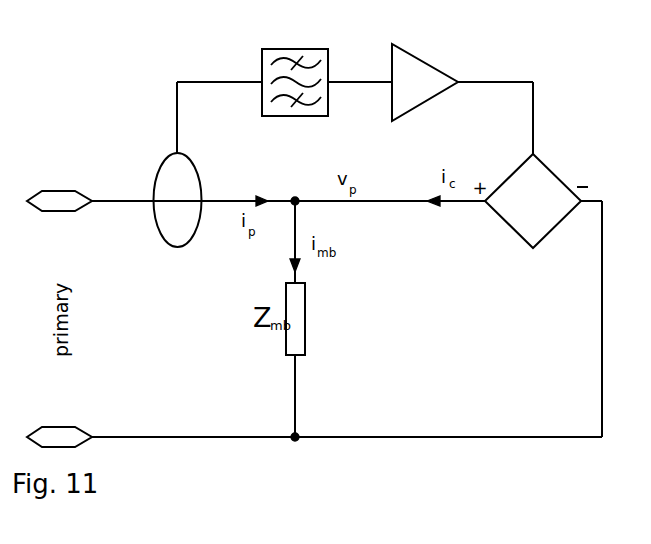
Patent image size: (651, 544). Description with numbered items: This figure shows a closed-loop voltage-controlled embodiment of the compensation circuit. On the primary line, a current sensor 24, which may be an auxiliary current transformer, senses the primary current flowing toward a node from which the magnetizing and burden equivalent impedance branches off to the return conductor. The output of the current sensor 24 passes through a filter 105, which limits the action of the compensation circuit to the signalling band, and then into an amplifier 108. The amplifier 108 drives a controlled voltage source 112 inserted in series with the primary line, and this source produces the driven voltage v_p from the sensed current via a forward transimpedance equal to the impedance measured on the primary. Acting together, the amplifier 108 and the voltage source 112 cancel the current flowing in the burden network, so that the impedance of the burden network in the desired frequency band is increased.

The current sensor 24 is at (158, 170).
The filter 105 is at (270, 75).
The amplifier 108 is at (427, 97).
The controlled voltage source 112 is at (523, 190).